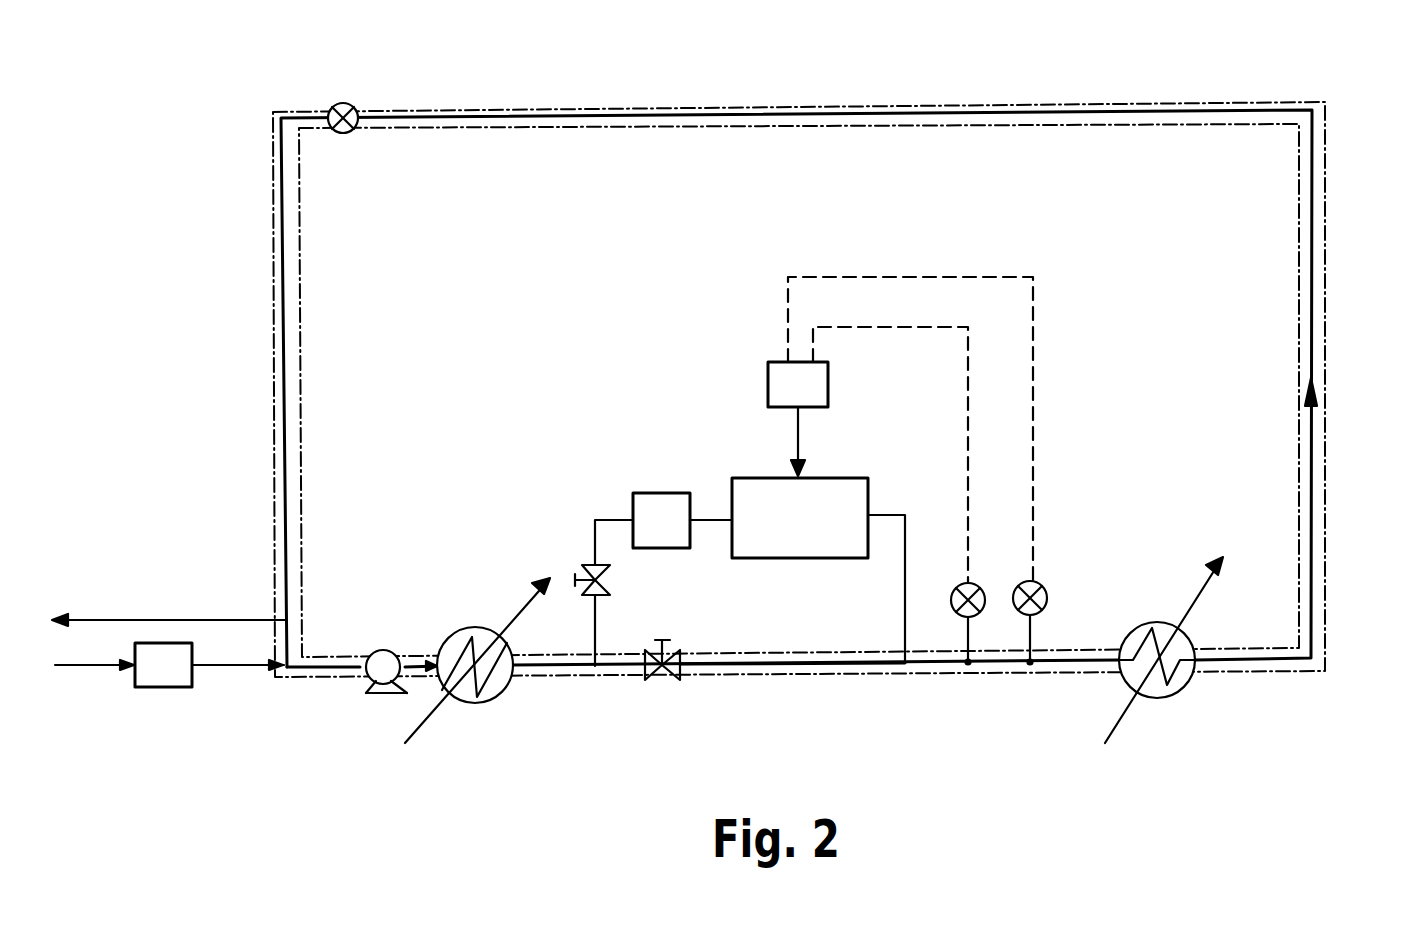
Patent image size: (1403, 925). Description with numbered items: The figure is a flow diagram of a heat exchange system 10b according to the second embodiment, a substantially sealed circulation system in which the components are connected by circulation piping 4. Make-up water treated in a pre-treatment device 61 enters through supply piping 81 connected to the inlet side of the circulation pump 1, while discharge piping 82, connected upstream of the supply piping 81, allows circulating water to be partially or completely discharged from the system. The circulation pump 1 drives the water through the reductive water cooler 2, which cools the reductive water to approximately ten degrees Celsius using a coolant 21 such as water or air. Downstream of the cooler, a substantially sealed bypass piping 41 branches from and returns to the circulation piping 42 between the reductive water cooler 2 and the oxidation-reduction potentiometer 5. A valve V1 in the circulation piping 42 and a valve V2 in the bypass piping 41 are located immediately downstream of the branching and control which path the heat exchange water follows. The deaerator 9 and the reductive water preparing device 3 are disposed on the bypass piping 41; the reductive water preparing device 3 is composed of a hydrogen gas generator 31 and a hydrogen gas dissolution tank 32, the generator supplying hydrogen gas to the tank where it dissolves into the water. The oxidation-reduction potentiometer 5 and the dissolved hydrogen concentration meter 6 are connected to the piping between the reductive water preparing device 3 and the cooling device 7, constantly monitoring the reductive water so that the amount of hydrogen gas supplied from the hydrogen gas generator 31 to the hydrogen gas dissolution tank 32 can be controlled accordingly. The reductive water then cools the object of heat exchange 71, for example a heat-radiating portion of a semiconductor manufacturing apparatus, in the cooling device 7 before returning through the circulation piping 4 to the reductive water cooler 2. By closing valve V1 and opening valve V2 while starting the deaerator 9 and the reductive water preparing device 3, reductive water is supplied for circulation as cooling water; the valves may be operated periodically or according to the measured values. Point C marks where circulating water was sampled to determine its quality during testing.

The heat exchange system 10b is at (948, 57).
The circulation piping 4 is at (1313, 587).
The sampling point C is at (355, 106).
The discharge piping 82 is at (237, 620).
The supply piping 81 is at (225, 667).
The pre-treatment device 61 is at (150, 690).
The circulation pump 1 is at (370, 690).
The reductive water cooler 2 is at (495, 701).
The coolant 21 is at (520, 618).
The valve V2 is at (590, 562).
The deaerator 9 is at (663, 548).
The reductive water preparing device 3 is at (748, 598).
The valve V1 is at (645, 675).
The circulation piping 42 is at (712, 675).
The bypass piping 41 is at (903, 634).
The hydrogen gas dissolution tank 32 is at (822, 557).
The hydrogen gas generator 31 is at (767, 393).
The oxidation-reduction potentiometer 5 is at (958, 584).
The dissolved hydrogen concentration meter 6 is at (1048, 590).
The cooling device 7 is at (1178, 698).
The object of heat exchange 71 is at (1193, 595).